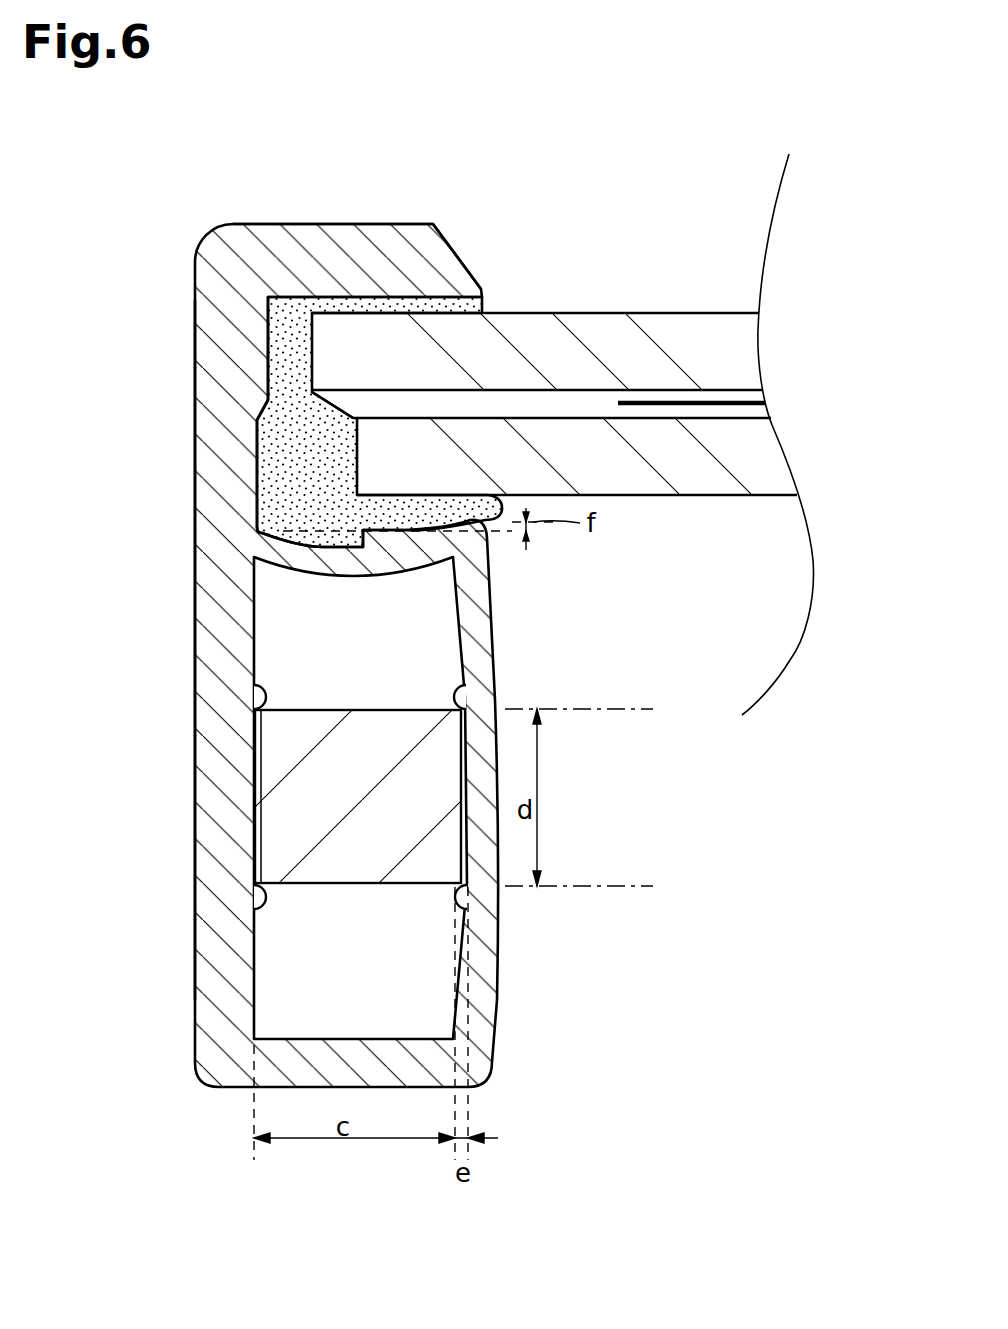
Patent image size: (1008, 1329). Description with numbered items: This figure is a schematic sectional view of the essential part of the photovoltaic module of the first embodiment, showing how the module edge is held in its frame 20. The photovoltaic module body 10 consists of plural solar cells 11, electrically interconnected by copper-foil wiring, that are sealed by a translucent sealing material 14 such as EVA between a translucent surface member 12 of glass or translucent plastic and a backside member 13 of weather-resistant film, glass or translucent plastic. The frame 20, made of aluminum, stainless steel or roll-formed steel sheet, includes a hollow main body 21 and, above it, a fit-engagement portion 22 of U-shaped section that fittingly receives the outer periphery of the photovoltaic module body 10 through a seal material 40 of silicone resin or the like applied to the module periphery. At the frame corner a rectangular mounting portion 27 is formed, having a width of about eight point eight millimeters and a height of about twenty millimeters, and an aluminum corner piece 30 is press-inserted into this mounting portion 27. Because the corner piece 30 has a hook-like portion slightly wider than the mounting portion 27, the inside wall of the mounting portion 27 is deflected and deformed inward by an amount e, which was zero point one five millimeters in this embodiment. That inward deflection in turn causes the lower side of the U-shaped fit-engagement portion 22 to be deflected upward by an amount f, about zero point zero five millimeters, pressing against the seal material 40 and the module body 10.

The photovoltaic module body 10 is at (578, 434).
The solar cell 11 is at (728, 403).
The surface member 12 is at (657, 317).
The backside member 13 is at (628, 478).
The translucent sealing material 14 is at (547, 405).
The frame 20 is at (197, 602).
The main body 21 is at (222, 650).
The fit-engagement portion 22 is at (330, 238).
The rectangular mounting portion 27 is at (253, 733).
The corner piece 30 is at (293, 807).
The seal material 40 is at (278, 472).